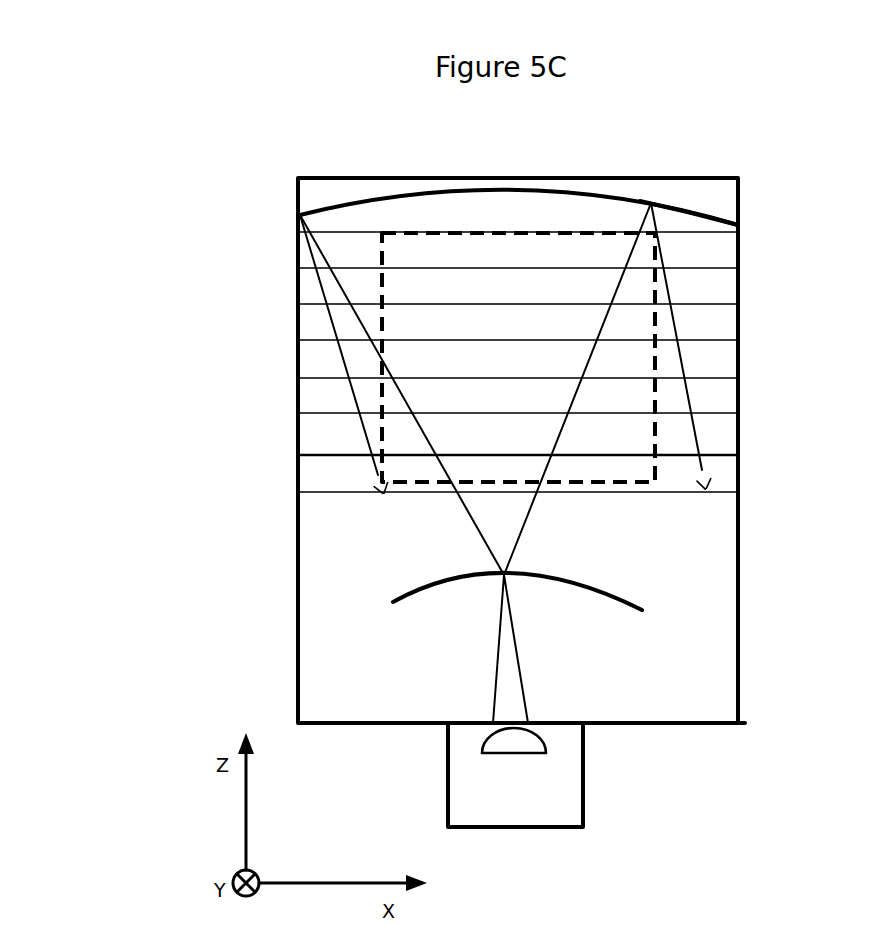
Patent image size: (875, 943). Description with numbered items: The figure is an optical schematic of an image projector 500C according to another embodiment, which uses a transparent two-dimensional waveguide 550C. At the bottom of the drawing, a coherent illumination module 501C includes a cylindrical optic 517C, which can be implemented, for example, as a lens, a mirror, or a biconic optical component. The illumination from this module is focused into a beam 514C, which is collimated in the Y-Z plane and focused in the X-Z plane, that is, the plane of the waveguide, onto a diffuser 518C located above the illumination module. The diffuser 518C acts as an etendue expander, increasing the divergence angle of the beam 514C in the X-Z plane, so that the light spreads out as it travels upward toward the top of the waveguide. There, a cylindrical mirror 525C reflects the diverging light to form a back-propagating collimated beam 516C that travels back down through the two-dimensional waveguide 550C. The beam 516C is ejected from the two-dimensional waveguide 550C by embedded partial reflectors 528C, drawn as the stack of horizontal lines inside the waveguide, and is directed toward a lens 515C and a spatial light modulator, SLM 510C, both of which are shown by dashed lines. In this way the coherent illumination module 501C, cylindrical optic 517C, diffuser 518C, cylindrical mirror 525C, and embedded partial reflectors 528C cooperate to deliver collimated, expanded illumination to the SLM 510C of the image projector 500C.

The image projector 500C is at (360, 158).
The two-dimensional waveguide 550C is at (668, 178).
The cylindrical mirror 525C is at (672, 206).
The SLM 510C is at (382, 257).
The lens 515C is at (380, 387).
The back-propagating collimated beam 516C is at (365, 437).
The embedded partial reflectors 528C is at (703, 233).
The diffuser 518C is at (610, 592).
The beam 514C is at (523, 685).
The cylindrical optic 517C is at (530, 742).
The coherent illumination module 501C is at (590, 815).